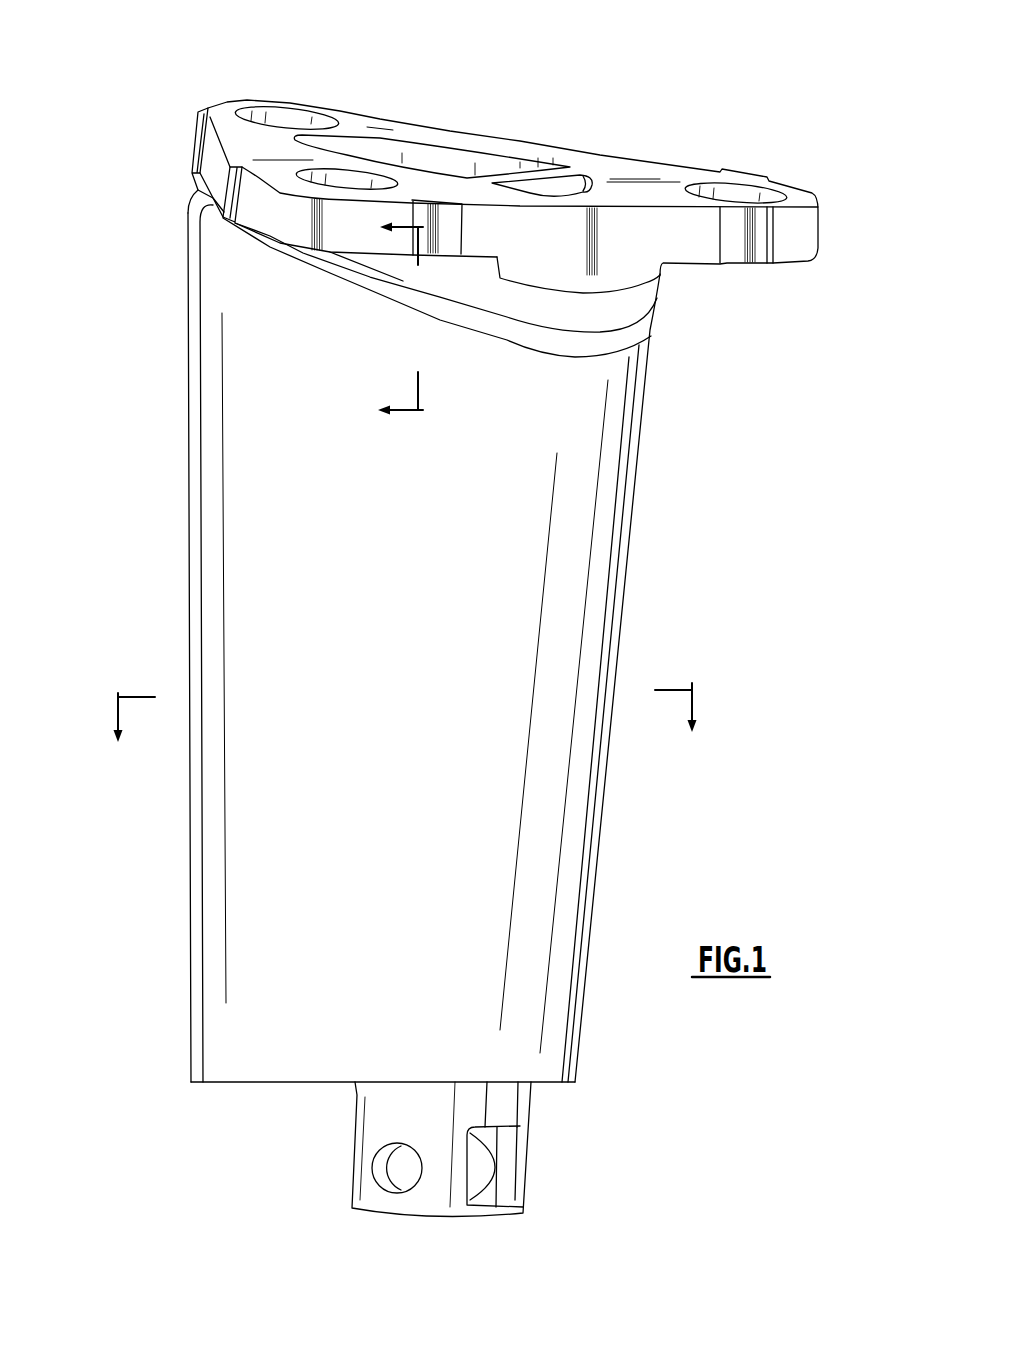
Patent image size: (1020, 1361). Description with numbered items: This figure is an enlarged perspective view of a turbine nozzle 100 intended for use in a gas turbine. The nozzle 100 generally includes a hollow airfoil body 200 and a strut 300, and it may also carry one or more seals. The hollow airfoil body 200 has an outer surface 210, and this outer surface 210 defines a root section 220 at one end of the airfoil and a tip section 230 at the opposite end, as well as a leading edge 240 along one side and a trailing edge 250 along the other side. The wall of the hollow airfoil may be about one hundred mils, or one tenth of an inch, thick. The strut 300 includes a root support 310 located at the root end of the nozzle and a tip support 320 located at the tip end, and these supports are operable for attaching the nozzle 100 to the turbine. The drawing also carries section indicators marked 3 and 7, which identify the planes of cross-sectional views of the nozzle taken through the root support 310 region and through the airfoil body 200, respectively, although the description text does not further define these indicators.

The nozzle 100 is at (158, 60).
The hollow airfoil body 200 is at (137, 475).
The outer surface 210 is at (183, 886).
The root section 220 is at (213, 347).
The tip section 230 is at (305, 1043).
The leading edge 240 is at (603, 504).
The trailing edge 250 is at (188, 557).
The strut 300 is at (672, 150).
The root support 310 is at (447, 129).
The tip support 320 is at (503, 1220).
The section line 3- 3 is at (404, 728).
The section line 7- 7 is at (393, 316).